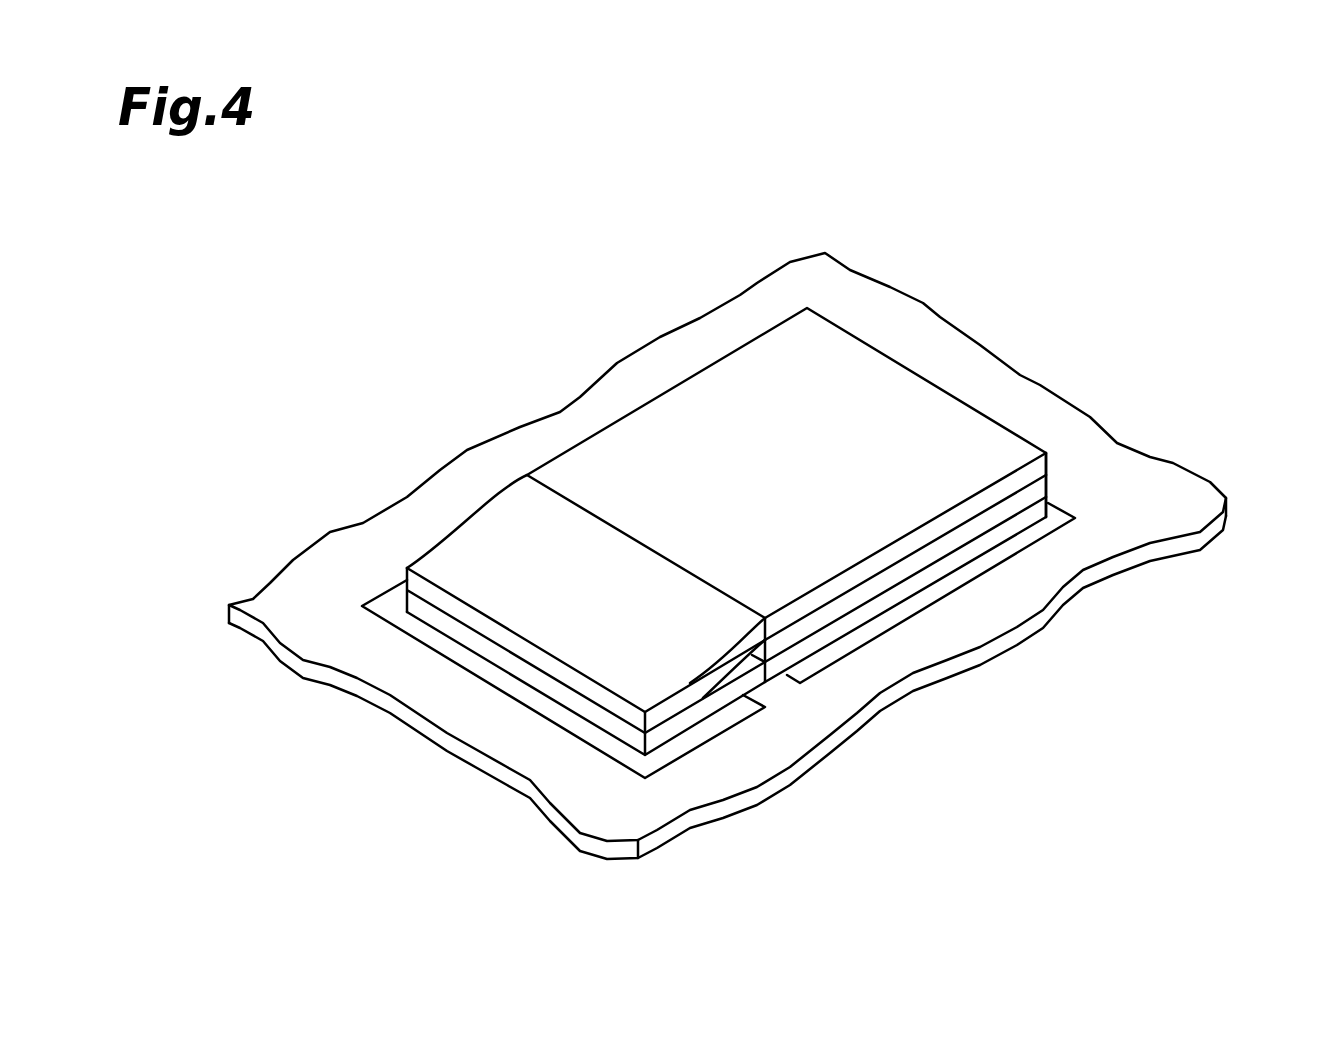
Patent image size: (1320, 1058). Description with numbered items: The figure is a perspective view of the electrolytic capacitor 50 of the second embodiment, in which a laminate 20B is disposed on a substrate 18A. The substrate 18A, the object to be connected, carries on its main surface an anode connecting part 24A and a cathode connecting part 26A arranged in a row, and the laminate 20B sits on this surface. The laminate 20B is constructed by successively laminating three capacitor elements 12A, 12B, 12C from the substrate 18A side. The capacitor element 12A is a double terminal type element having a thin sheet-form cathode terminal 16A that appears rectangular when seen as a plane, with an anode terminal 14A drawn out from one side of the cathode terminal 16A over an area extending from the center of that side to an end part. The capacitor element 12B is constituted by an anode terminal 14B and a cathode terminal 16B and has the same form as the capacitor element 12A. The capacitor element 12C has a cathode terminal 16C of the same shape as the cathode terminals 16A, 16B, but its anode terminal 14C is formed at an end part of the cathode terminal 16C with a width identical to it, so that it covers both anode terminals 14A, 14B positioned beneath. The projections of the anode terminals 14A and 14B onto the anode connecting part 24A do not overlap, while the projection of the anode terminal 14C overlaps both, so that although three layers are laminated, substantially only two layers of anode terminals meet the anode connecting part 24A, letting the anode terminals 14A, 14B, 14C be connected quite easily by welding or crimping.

The electrolytic capacitor 50 is at (768, 532).
The capacitor element 12A is at (1076, 492).
The capacitor element 12B is at (1073, 475).
The capacitor element 12C is at (1069, 450).
The anode terminal 14A is at (583, 705).
The anode terminal 14B is at (465, 632).
The anode terminal 14C is at (468, 565).
The cathode terminal 16A is at (918, 583).
The cathode terminal 16B is at (963, 537).
The cathode terminal 16C is at (995, 492).
The substrate 18A is at (1195, 495).
The laminate 20B is at (1278, 388).
The anode connecting part 24A is at (698, 733).
The cathode connecting part 26A is at (847, 642).